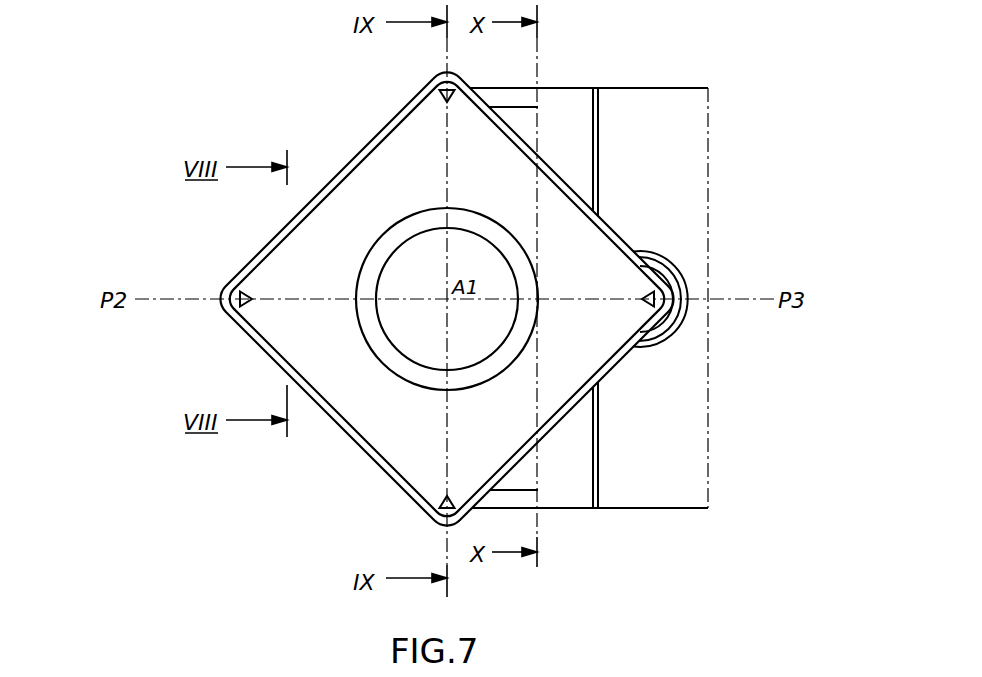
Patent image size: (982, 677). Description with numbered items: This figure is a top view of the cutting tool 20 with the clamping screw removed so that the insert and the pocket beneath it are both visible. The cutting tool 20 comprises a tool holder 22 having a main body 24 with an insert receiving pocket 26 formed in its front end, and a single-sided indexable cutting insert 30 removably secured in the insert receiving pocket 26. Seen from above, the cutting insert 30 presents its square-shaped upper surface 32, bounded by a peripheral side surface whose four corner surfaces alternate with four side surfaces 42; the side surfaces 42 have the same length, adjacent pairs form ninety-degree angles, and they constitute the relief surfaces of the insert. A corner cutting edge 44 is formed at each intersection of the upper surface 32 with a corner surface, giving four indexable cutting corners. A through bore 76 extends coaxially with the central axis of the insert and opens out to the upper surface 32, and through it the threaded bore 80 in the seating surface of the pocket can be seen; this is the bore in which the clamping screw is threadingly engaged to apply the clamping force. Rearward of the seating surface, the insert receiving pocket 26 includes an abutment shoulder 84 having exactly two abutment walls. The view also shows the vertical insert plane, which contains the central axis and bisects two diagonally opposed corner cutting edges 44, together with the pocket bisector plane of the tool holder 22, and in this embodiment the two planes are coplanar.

The cutting tool 20 is at (262, 140).
The tool holder 22 is at (610, 470).
The main body 24 is at (668, 433).
The insert receiving pocket 26 is at (549, 140).
The cutting insert 30 is at (382, 402).
The upper surface 32 is at (347, 380).
The side surfaces 42 is at (394, 118).
The corner cutting edge 44 is at (225, 304).
The through bore 76 is at (391, 252).
The threaded bore 80 is at (419, 284).
The abutment shoulder 84 is at (633, 233).